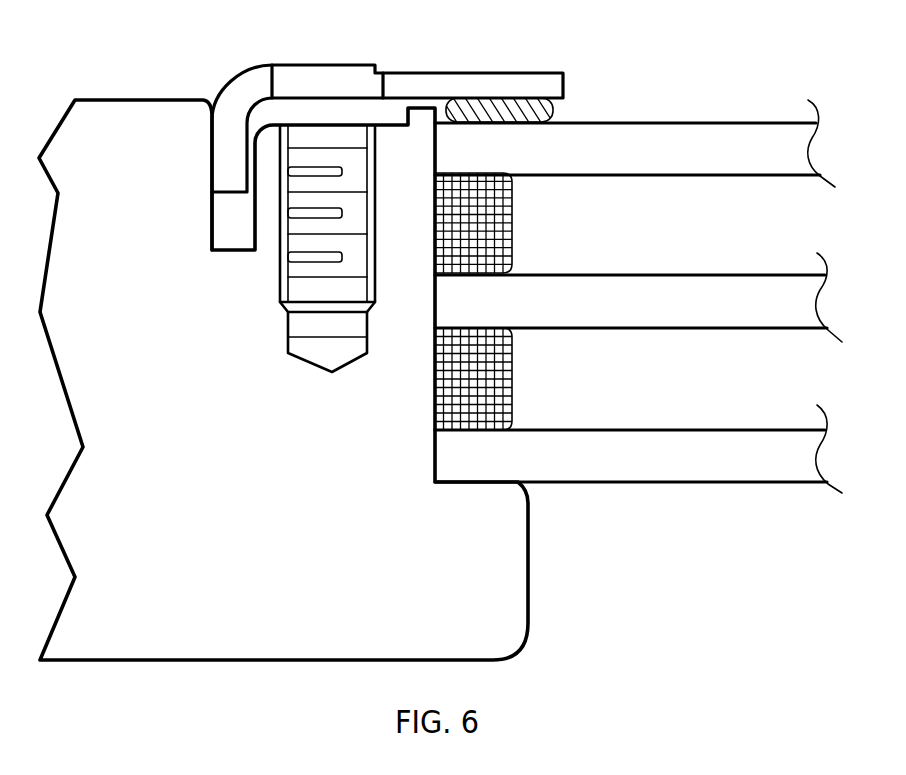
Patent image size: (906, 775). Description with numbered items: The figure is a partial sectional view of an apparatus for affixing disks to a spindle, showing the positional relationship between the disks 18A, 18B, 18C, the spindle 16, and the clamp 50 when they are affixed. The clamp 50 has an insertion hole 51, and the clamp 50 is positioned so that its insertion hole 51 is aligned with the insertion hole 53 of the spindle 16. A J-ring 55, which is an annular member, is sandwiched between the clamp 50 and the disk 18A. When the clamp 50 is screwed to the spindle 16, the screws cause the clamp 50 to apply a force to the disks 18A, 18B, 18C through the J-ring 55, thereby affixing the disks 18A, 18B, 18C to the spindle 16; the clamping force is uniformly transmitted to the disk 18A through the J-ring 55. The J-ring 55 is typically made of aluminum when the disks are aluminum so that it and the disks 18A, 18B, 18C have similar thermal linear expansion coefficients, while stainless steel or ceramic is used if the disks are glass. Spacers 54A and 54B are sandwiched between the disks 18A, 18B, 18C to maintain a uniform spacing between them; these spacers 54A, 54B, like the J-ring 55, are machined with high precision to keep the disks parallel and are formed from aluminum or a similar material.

The spindle 16 is at (530, 577).
The disk 18A is at (752, 122).
The disk 18B is at (752, 274).
The disk 18C is at (752, 430).
The clamp 50 is at (228, 83).
The insertion hole 51 is at (293, 64).
The insertion hole 53 is at (300, 242).
The spacer 54A is at (512, 218).
The spacer 54B is at (512, 372).
The J-ring 55 is at (553, 118).